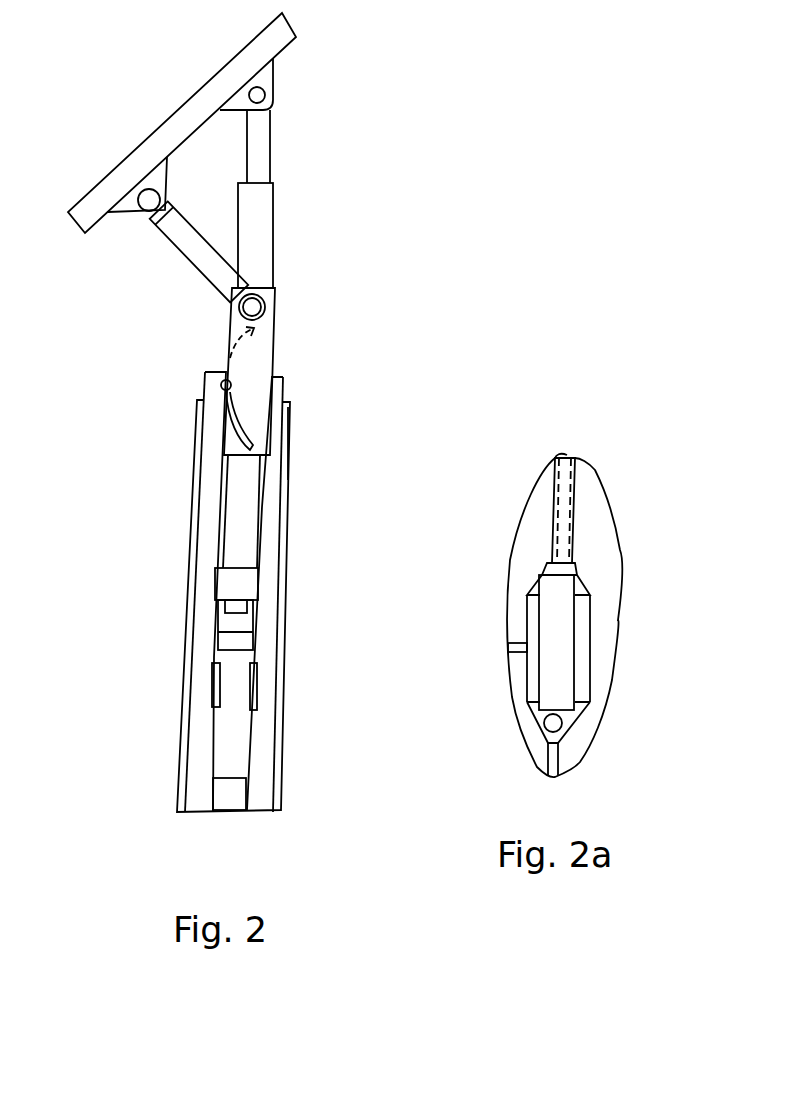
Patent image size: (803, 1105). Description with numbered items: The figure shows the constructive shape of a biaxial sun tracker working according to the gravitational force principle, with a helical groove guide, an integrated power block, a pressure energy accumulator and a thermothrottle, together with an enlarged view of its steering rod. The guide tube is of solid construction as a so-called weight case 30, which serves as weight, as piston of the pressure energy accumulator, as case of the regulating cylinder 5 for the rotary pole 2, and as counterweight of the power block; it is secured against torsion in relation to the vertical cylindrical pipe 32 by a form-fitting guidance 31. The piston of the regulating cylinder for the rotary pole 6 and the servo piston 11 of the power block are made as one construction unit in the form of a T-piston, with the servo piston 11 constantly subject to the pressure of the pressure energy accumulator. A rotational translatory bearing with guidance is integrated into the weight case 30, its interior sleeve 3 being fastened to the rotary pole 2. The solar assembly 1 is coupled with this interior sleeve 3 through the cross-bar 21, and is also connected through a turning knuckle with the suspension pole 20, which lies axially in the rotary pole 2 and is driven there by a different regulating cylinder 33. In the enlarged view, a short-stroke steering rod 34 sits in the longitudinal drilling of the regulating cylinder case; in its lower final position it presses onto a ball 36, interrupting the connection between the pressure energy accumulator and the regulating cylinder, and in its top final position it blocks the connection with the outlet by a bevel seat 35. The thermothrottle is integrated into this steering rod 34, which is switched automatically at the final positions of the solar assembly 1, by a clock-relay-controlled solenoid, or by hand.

In FIG. 2, the solar assembly 1 is at (188, 113).
In FIG. 2, the suspension pole 20 is at (262, 142).
In FIG. 2, the rotary pole 2 is at (258, 222).
In FIG. 2, the cross-bar 21 is at (208, 265).
In FIG. 2, the interior sleeve 3 is at (265, 338).
In FIG. 2, the weight case 30 is at (212, 443).
In FIG. 2, the form-fitting guidance 31 is at (298, 428).
In FIG. 2, the vertical cylindrical pipe 32 is at (192, 498).
In FIG. 2, the regulating cylinder 33 is at (227, 642).
In FIG. 2, the piston of the regulating cylinder for the rotary pole 6 is at (217, 657).
In FIG. 2, the regulating cylinder 5 is at (215, 700).
In FIG. 2, the servo piston 11 is at (225, 775).
In FIG. 2A, the bevel seat 35 is at (545, 568).
In FIG. 2A, the steering rod 34 is at (552, 668).
In FIG. 2A, the ball 36 is at (538, 728).